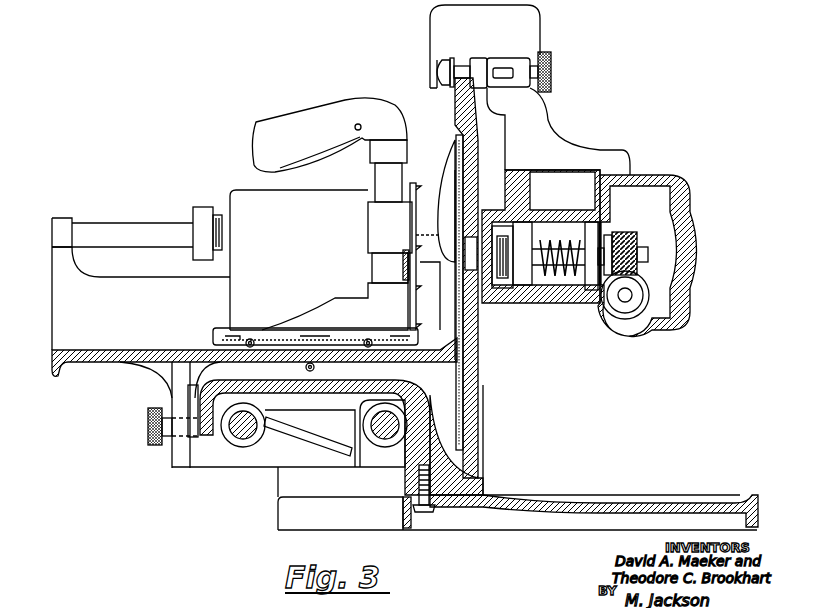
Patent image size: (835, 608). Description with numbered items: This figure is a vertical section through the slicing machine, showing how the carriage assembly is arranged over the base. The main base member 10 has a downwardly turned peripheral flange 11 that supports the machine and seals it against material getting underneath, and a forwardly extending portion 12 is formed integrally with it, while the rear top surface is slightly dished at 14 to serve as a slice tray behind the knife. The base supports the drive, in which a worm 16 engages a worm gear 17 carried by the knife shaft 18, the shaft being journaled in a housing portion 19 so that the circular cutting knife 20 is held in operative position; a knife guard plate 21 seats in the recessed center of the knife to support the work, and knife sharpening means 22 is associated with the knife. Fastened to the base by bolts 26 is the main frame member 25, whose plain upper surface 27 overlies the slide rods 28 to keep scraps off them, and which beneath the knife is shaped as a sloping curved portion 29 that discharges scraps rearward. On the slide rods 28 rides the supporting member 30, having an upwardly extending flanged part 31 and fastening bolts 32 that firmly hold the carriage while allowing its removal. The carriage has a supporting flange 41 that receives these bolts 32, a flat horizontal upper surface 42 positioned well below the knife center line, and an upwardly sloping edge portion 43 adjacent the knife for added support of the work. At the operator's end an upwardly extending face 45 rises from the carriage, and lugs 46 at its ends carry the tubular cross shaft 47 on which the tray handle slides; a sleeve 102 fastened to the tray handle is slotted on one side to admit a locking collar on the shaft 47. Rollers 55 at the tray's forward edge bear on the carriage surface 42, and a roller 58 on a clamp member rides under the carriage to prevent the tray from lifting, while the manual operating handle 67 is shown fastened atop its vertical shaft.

The main base member 10 is at (545, 526).
The peripheral flange 11 is at (405, 505).
The forwardly extending portion 12 is at (296, 520).
The dished top surface 14 is at (622, 500).
The worm 16 is at (632, 310).
The worm gear 17 is at (635, 240).
The knife shaft 18 is at (565, 272).
The housing portion 19 is at (517, 305).
The circular cutting knife 20 is at (485, 362).
The knife guard plate 21 is at (455, 383).
The knife sharpening means 22 is at (525, 33).
The main frame member 25 is at (408, 470).
The bolts 26 is at (426, 513).
The plain upper surface 27 is at (272, 425).
The slide rods 28 is at (225, 463).
The sloping curved portion 29 is at (460, 462).
The supporting member 30 is at (233, 440).
The flanged part 31 is at (195, 440).
The fastening bolts 32 is at (148, 427).
The supporting flange 41 is at (178, 395).
The upper surface of carriage 42 is at (82, 362).
The upwardly sloping edge portion 43 is at (450, 347).
The upwardly extending face 45 is at (118, 282).
The lugs 46 is at (65, 249).
The tubular cross shaft 47 is at (133, 222).
The rollers 55 is at (252, 338).
The roller 58 is at (315, 368).
The manual operating handle 67 is at (327, 118).
The sleeve 102 is at (218, 205).